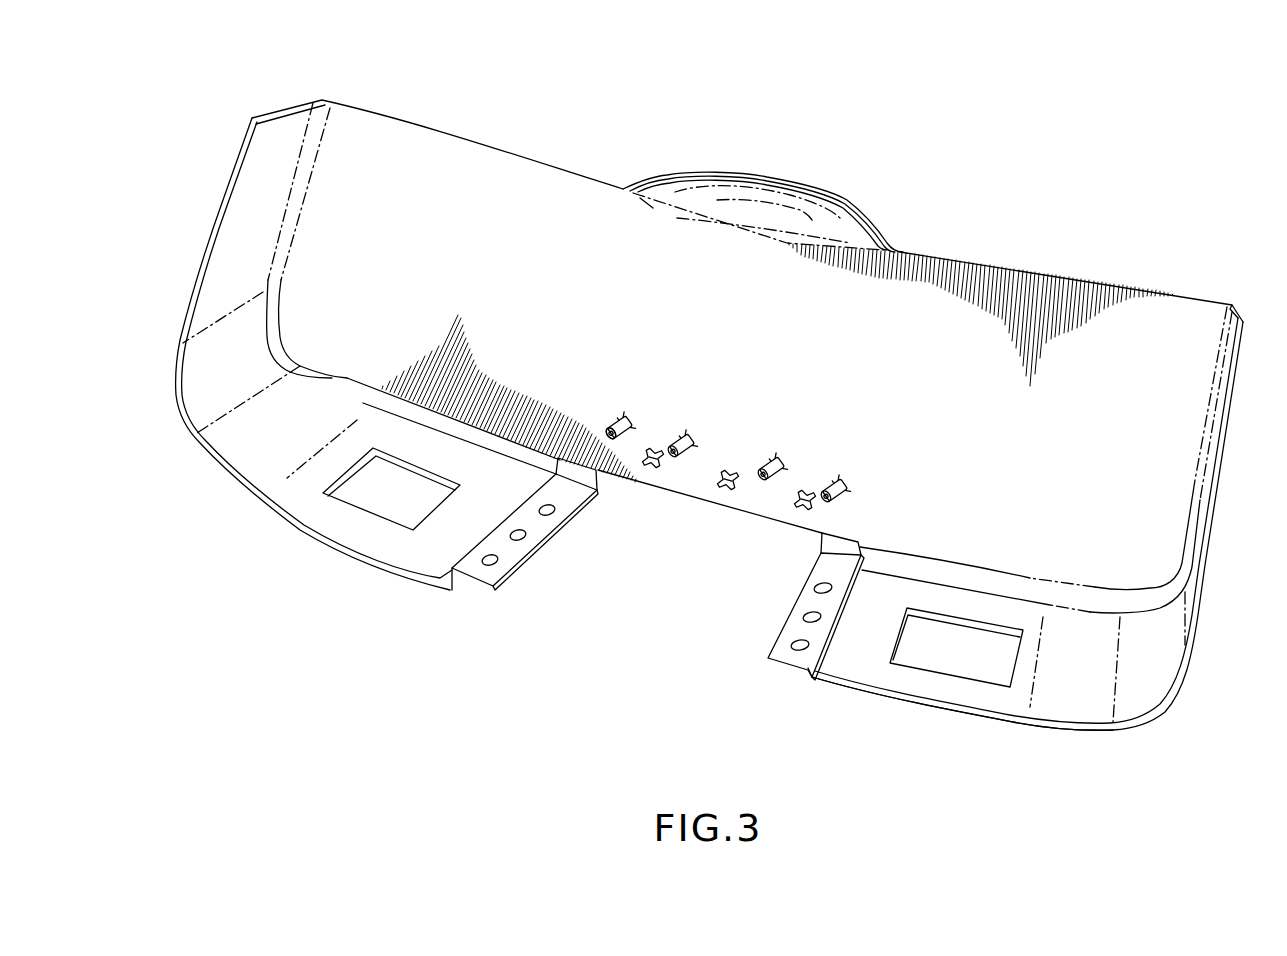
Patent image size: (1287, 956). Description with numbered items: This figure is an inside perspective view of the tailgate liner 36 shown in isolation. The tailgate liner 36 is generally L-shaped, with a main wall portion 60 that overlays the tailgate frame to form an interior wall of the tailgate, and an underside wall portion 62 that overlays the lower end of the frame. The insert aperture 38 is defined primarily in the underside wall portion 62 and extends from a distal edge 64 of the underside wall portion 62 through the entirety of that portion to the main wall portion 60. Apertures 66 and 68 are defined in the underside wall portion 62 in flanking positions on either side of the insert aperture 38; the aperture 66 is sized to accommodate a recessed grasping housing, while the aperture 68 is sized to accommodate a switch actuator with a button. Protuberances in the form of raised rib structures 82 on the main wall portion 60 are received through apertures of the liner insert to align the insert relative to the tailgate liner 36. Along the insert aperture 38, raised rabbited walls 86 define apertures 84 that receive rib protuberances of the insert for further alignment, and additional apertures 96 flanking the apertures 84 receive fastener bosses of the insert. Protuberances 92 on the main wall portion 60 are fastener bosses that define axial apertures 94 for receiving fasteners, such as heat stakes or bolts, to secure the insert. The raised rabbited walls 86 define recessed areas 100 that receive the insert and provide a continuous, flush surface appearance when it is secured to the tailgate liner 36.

The tailgate liner 36 is at (360, 592).
The insert aperture 38 is at (632, 633).
The main wall portion 60 is at (488, 192).
The underside wall portion 62 is at (937, 687).
The distal edge 64 is at (990, 720).
The aperture 66 is at (893, 655).
The aperture 68 is at (345, 518).
The raised rib structures 82 is at (652, 470).
The apertures 84 is at (538, 540).
The raised rabbited walls 86 is at (542, 524).
The protuberances 92 is at (633, 418).
The axial apertures 94 is at (615, 424).
The apertures 96 is at (540, 505).
The recessed areas 100 is at (672, 609).